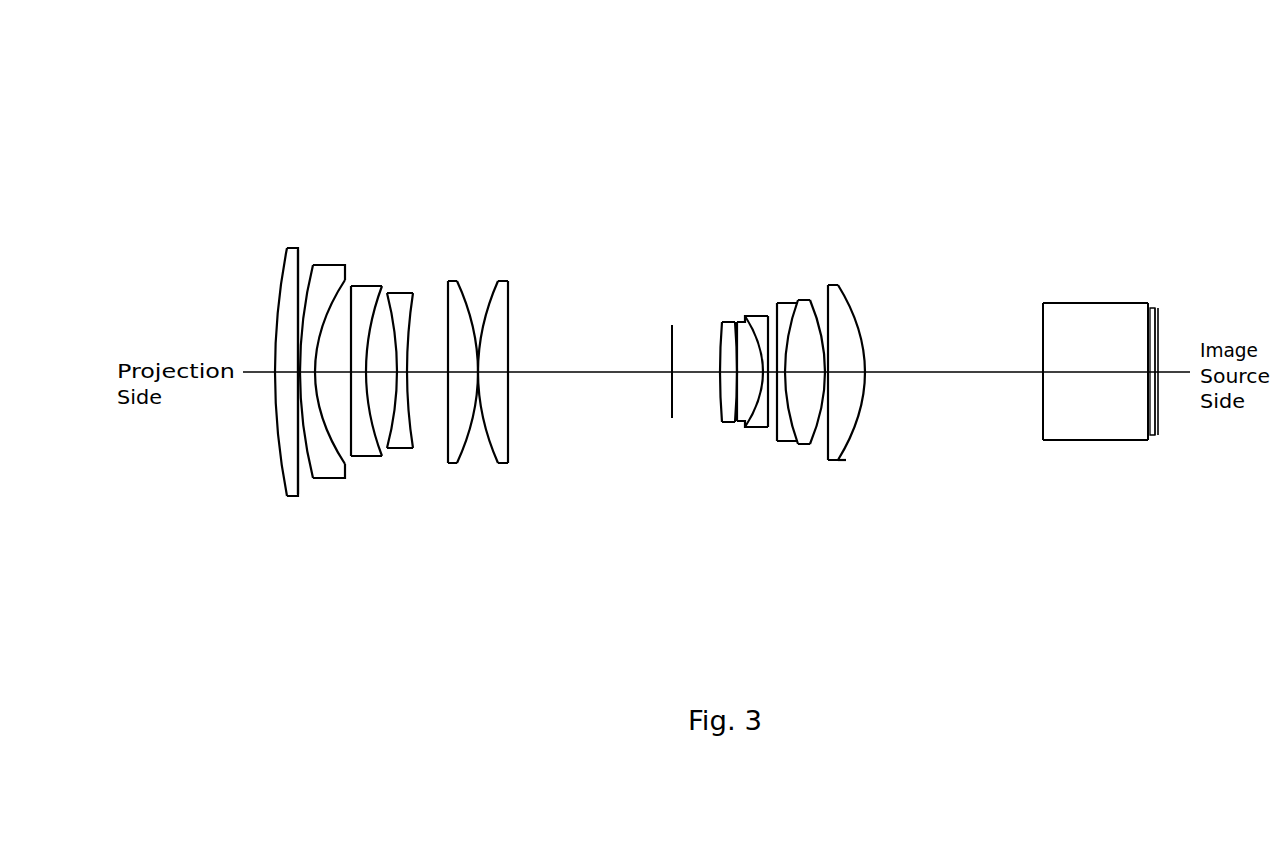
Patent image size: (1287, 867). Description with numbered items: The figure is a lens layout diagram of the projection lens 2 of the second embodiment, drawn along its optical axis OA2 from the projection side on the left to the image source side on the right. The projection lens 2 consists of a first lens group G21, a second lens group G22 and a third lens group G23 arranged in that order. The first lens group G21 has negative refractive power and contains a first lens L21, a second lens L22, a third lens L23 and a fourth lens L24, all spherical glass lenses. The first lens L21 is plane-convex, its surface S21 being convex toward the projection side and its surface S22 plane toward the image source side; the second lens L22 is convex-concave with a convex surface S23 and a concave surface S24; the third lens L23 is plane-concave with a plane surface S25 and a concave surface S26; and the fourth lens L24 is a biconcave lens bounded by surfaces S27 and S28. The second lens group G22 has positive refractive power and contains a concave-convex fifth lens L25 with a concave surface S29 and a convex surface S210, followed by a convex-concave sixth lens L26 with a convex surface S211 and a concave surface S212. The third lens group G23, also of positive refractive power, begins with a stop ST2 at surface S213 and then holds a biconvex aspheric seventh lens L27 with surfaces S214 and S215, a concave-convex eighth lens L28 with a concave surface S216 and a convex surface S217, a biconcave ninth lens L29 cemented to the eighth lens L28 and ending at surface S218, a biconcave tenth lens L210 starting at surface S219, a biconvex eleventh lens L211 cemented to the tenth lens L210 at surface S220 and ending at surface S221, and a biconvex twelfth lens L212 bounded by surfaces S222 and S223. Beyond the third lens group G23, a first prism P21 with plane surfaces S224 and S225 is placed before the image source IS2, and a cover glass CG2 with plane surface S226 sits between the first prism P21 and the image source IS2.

The projection lens 2 is at (770, 80).
The first lens group G21 is at (442, 142).
The second lens group G22 is at (573, 142).
The third lens group G23 is at (880, 142).
The optical axis OA2 is at (262, 375).
The first lens L21 is at (264, 362).
The second lens L22 is at (324, 374).
The third lens L23 is at (377, 362).
The fourth lens L24 is at (427, 379).
The fifth lens L25 is at (479, 353).
The sixth lens L26 is at (546, 368).
The stop ST2 is at (636, 327).
The seventh lens L27 is at (689, 327).
The eighth lens L28 is at (737, 359).
The ninth lens L29 is at (796, 350).
The tenth lens L210 is at (845, 350).
The eleventh lens L211 is at (881, 350).
The twelfth lens L212 is at (922, 335).
The first prism P21 is at (1093, 357).
The cover glass CG2 is at (1196, 346).
The image source IS2 is at (1158, 308).
The surface S21 is at (287, 480).
The surface S22 is at (297, 480).
The surface S23 is at (313, 478).
The surface S24 is at (332, 468).
The surface S25 is at (365, 458).
The surface S26 is at (373, 458).
The surface S27 is at (392, 450).
The surface S28 is at (401, 450).
The surface S29 is at (448, 450).
The surface S210 is at (463, 450).
The surface S211 is at (498, 458).
The surface S212 is at (512, 458).
The surface S213 is at (672, 418).
The surface S214 is at (723, 408).
The surface S215 is at (737, 417).
The surface S216 is at (743, 430).
The surface S217 is at (752, 432).
The surface S218 is at (763, 437).
The surface S219 is at (788, 443).
The surface S220 is at (807, 448).
The surface S221 is at (832, 462).
The surface S222 is at (837, 465).
The surface S223 is at (850, 440).
The surface S224 is at (1043, 420).
The surface S225 is at (1147, 420).
The surface S226 is at (1152, 435).